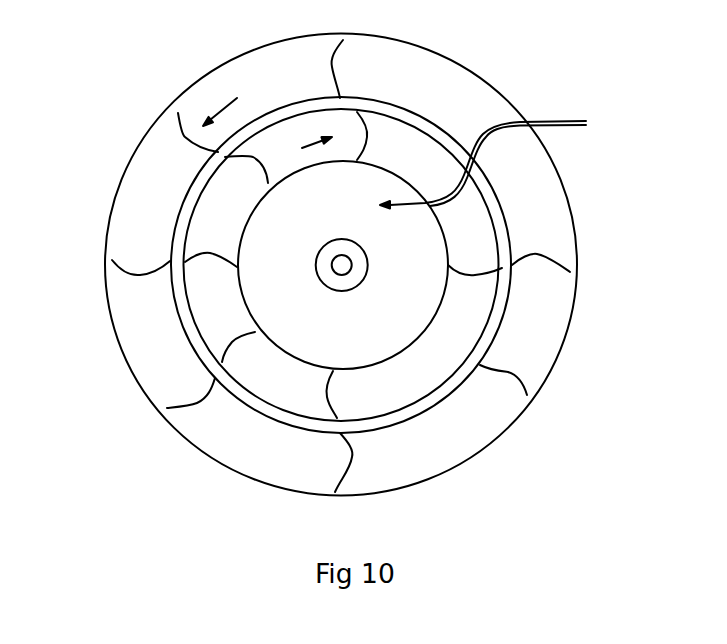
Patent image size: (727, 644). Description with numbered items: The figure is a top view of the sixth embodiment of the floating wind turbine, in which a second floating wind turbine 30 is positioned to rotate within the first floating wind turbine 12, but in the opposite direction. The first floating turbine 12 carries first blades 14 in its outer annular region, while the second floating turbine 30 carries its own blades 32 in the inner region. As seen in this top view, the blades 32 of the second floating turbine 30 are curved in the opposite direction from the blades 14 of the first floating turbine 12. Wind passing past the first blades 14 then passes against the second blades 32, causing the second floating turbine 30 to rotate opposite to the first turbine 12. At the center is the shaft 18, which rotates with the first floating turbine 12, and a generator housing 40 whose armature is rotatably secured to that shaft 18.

The first floating wind turbine 12 is at (532, 195).
The blades 14 is at (500, 122).
The shaft 18 is at (335, 262).
The second floating wind turbine 30 is at (470, 246).
The blades 32 is at (487, 275).
The generator housing 40 is at (325, 270).